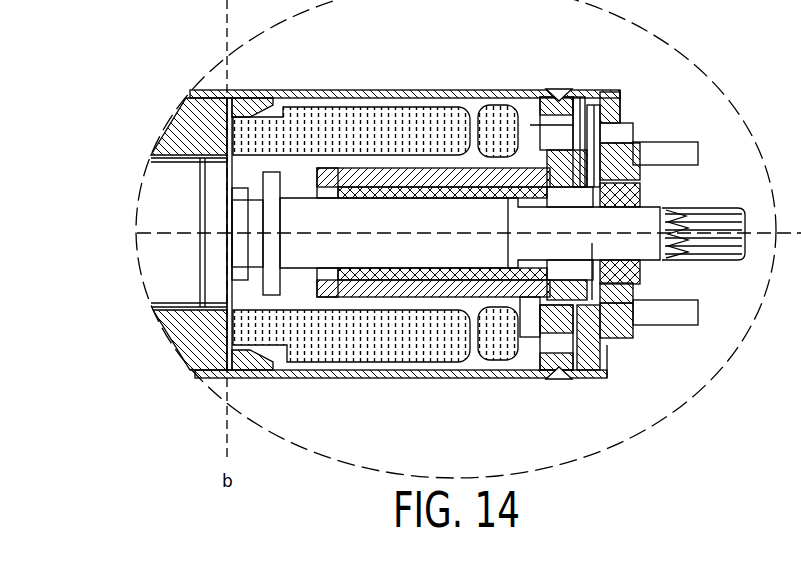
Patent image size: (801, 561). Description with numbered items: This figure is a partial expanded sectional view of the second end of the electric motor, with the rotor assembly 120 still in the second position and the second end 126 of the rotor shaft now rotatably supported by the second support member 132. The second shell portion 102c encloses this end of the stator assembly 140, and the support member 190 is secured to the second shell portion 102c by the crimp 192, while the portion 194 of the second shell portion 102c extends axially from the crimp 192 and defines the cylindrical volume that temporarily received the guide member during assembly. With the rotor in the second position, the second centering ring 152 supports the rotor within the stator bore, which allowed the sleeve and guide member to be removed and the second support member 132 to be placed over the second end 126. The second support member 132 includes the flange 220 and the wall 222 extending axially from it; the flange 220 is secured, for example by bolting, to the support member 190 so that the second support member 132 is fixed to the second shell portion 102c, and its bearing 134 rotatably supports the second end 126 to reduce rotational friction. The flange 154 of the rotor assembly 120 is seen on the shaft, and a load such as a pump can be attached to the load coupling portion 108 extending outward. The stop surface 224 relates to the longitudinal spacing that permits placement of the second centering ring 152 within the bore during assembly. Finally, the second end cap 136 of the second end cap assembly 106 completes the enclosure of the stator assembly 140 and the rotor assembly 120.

The second shell portion 102c is at (330, 89).
The second end cap assembly 106 is at (662, 76).
The load coupling portion 108 is at (715, 263).
The rotor assembly 120 is at (186, 184).
The second end 126 is at (377, 258).
The second support member 132 is at (413, 165).
The bearing 134 is at (432, 193).
The second end cap 136 is at (622, 110).
The stator assembly 140 is at (202, 122).
The second centering ring 152 is at (218, 267).
The flange 154 is at (273, 260).
The support member 190 is at (558, 97).
The crimp 192 is at (560, 378).
The portion 194 is at (580, 376).
The flange 220 is at (582, 97).
The wall 222 is at (453, 293).
The stop surface 224 is at (327, 297).